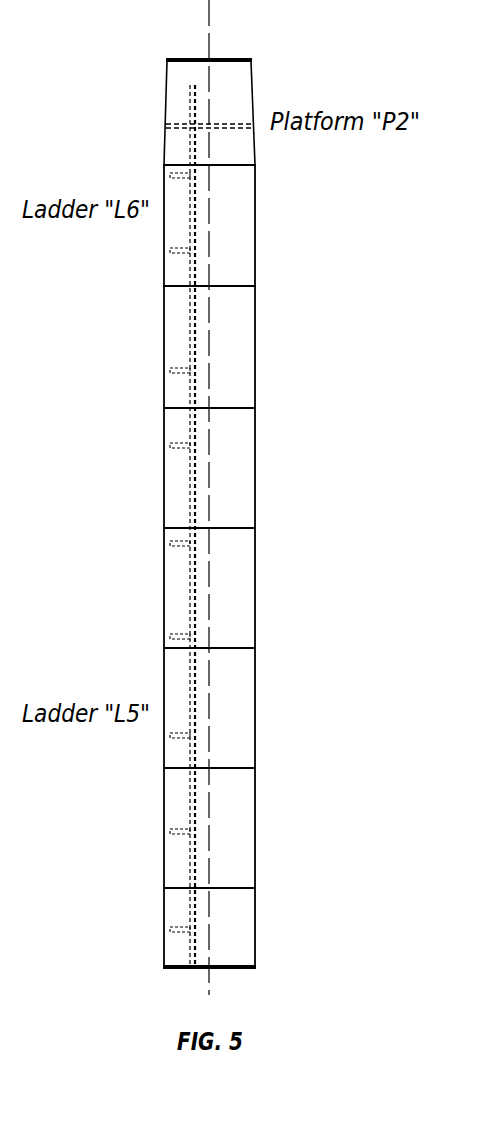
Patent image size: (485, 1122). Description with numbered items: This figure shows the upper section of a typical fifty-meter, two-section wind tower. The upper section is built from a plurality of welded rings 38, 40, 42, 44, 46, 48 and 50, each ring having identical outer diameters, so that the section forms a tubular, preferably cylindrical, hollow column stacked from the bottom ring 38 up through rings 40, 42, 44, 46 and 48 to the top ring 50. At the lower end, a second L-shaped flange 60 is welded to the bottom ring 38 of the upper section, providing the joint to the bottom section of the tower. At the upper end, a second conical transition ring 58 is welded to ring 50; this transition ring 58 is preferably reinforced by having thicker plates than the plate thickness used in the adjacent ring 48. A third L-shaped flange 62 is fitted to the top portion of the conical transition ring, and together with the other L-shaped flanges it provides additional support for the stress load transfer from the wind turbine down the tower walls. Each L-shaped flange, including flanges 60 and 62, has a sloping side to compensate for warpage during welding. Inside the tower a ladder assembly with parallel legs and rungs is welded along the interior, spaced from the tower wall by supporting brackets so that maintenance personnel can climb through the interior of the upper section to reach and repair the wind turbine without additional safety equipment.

The welded ring 38 is at (256, 924).
The welded ring 40 is at (256, 827).
The welded ring 42 is at (256, 708).
The welded ring 44 is at (256, 589).
The welded ring 46 is at (256, 469).
The welded ring 48 is at (256, 346).
The welded ring 50 is at (256, 226).
The second conical transition ring 58 is at (164, 118).
The second L-shaped flange 60 is at (240, 969).
The third L-shaped flange 62 is at (245, 59).